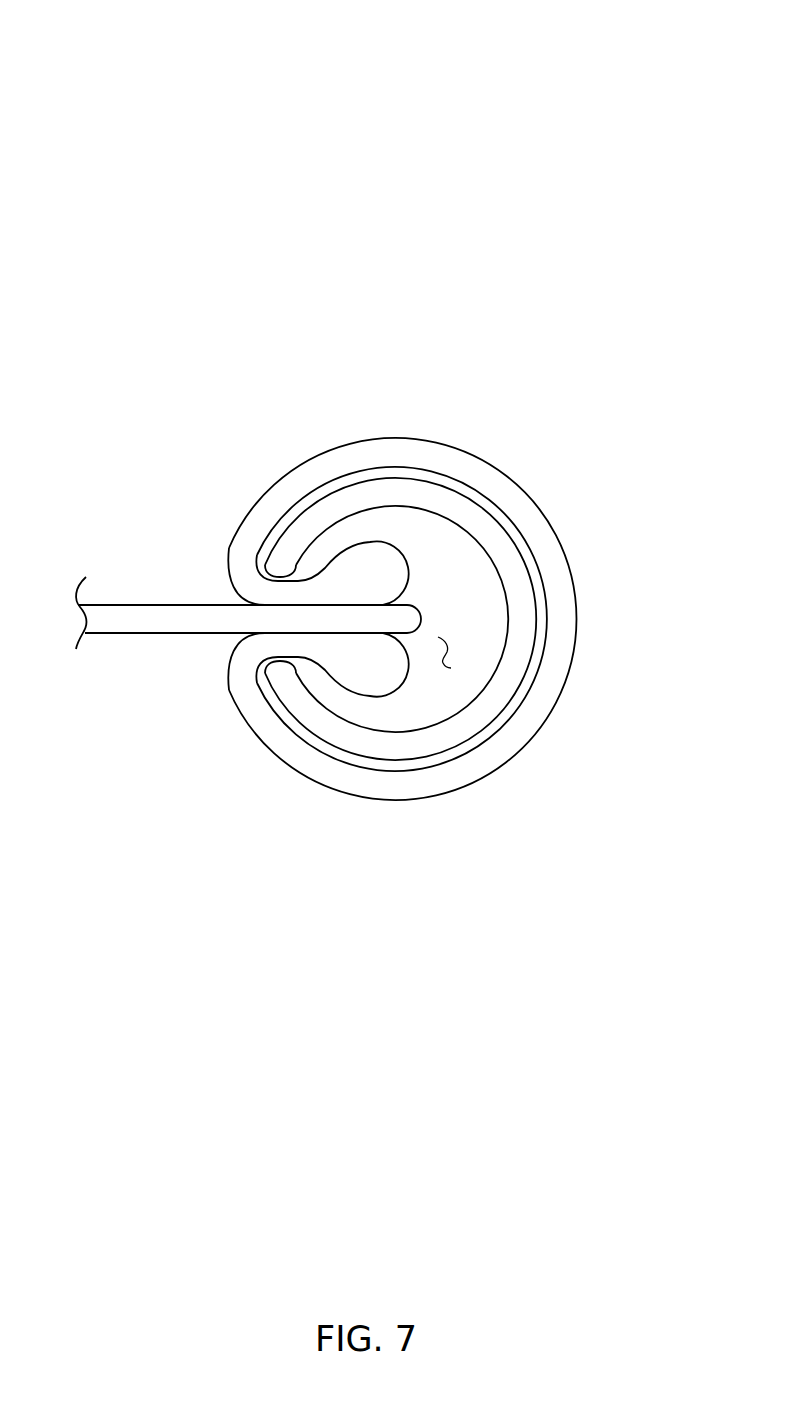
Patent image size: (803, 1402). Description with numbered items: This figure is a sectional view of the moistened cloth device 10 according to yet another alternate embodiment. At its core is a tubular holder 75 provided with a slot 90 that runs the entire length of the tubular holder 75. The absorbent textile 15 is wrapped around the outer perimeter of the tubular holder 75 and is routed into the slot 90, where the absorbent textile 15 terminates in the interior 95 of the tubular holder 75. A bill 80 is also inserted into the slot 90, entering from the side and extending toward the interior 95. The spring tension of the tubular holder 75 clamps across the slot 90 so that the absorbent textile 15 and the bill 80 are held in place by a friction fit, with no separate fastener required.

The device 10 is at (119, 186).
The absorbent textile 15 is at (400, 467).
The tubular holder 75 is at (498, 537).
The bill 80 is at (174, 619).
The slot 90 is at (262, 612).
The interior 95 is at (448, 651).